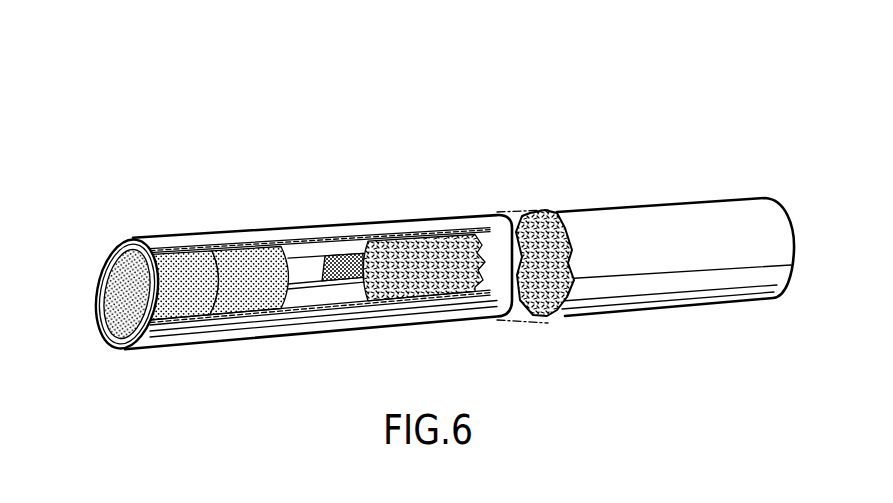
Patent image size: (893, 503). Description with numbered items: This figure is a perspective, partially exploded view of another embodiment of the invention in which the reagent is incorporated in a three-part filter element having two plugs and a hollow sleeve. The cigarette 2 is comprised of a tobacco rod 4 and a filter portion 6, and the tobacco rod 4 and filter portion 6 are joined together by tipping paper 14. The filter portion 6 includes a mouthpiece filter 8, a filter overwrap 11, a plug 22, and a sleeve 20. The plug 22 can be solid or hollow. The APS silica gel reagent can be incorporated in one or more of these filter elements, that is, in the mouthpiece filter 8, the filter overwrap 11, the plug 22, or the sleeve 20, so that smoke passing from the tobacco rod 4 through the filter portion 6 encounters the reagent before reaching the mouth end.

The cigarette 2 is at (255, 170).
The tobacco rod 4 is at (631, 222).
The filter portion 6 is at (190, 215).
The mouthpiece filter 8 is at (100, 245).
The filter overwrap 11 is at (123, 343).
The tipping paper 14 is at (313, 229).
The sleeve 20 is at (330, 297).
The plug 22 is at (259, 294).